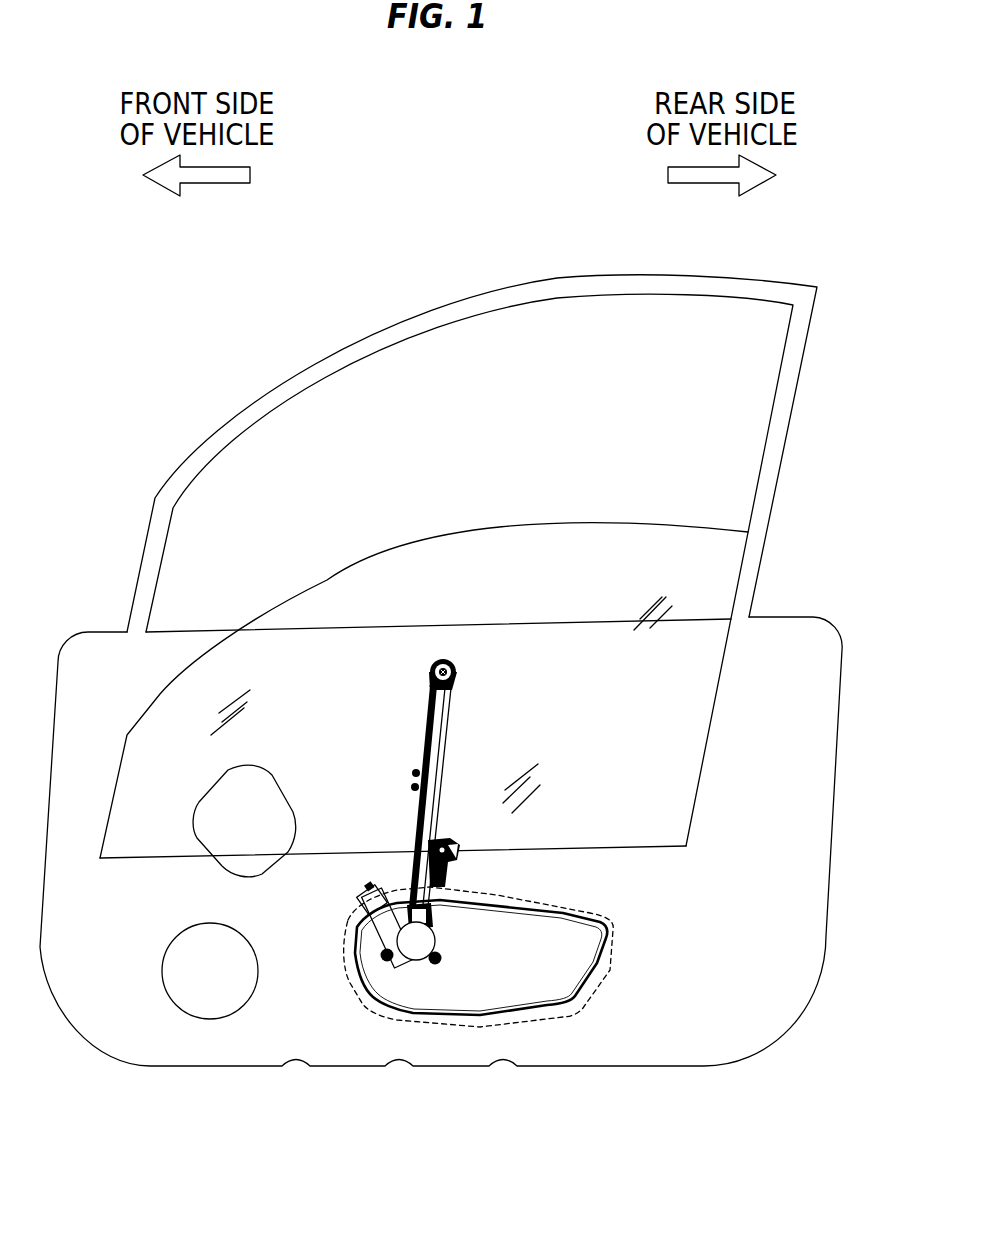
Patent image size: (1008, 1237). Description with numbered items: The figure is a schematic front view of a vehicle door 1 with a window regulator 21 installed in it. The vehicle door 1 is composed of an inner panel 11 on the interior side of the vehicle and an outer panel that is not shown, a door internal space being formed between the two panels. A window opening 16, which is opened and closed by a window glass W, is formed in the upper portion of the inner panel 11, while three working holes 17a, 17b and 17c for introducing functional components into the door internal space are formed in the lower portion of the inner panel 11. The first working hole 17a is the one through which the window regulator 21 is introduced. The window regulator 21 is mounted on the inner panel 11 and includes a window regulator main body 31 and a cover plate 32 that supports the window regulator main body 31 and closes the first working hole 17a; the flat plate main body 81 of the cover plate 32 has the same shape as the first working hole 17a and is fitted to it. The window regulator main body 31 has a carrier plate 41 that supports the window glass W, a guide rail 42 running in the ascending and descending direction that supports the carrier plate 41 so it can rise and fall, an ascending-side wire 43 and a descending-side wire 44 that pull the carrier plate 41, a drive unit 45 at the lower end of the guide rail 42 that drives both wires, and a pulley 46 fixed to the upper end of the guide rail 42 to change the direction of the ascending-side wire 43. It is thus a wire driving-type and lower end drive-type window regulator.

The vehicle door 1 is at (849, 260).
The inner panel 11 is at (793, 410).
The window opening 16 is at (783, 363).
The window glass W is at (165, 690).
The window regulator 21 is at (574, 794).
The first working hole 17a is at (373, 998).
The working hole 17b is at (198, 795).
The working hole 17c is at (165, 948).
The window regulator main body 31 is at (440, 822).
The cover plate 32 is at (615, 926).
The carrier plate 41 is at (453, 853).
The guide rail 42 is at (435, 803).
The ascending-side wire 43 is at (448, 712).
The descending-side wire 44 is at (435, 913).
The drive unit 45 is at (454, 965).
The pulley 46 is at (456, 668).
The plate main body 81 is at (576, 969).